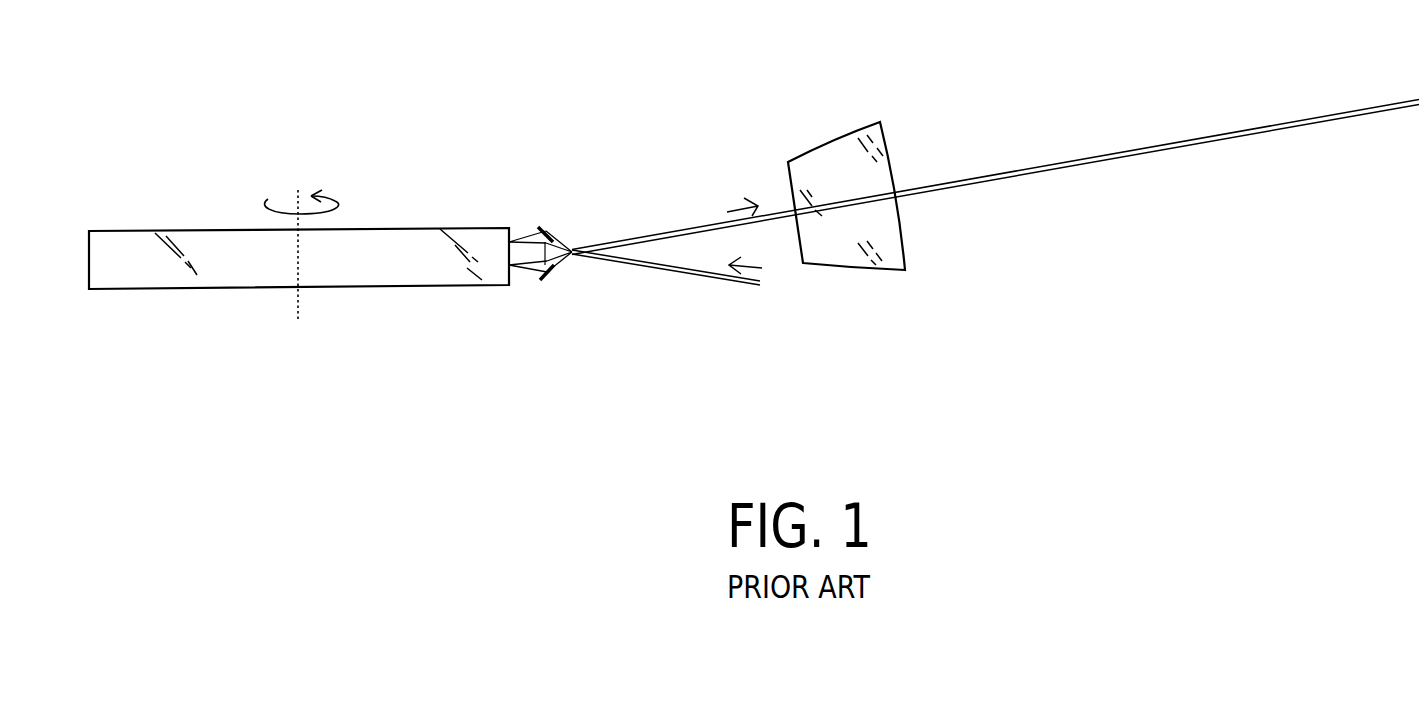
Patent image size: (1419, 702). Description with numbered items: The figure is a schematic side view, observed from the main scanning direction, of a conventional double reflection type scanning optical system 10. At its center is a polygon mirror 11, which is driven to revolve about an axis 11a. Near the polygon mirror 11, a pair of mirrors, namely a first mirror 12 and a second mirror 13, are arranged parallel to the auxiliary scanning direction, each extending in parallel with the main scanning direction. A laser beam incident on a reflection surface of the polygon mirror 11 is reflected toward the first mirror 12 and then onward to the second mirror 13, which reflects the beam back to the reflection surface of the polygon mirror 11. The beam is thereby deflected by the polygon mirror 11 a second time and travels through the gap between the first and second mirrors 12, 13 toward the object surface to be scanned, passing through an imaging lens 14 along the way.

The double reflection type scanning optical system 10 is at (582, 93).
The polygon mirror 11 is at (183, 230).
The axis 11a is at (300, 292).
The first mirror 12 is at (547, 228).
The second mirror 13 is at (541, 282).
The imaging lens 14 is at (840, 135).